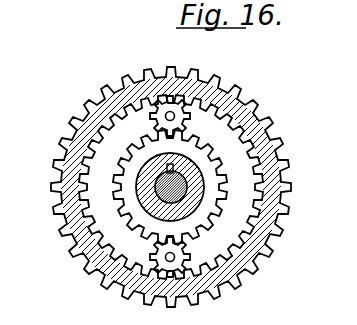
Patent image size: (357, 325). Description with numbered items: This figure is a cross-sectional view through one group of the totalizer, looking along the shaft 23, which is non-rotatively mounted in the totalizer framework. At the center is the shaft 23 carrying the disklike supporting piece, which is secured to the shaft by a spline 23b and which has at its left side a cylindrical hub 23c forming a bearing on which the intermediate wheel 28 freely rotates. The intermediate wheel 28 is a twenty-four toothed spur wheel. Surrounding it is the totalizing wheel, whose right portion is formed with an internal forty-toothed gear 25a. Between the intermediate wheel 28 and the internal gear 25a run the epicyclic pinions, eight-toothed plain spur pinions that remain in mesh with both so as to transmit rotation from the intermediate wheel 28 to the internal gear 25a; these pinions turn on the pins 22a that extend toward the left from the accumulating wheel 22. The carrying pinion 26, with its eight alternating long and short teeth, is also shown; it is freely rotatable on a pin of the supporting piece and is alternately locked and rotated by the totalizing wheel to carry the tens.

The carrying pinion 26 is at (233, 92).
The internal forty-toothed gear 25a is at (252, 134).
The intermediate wheel 28 is at (210, 167).
The shaft 23 is at (157, 190).
The hub 23c is at (200, 190).
The spline 23b is at (167, 172).
The accumulating wheel 22 is at (279, 236).
The pin 22a is at (177, 262).